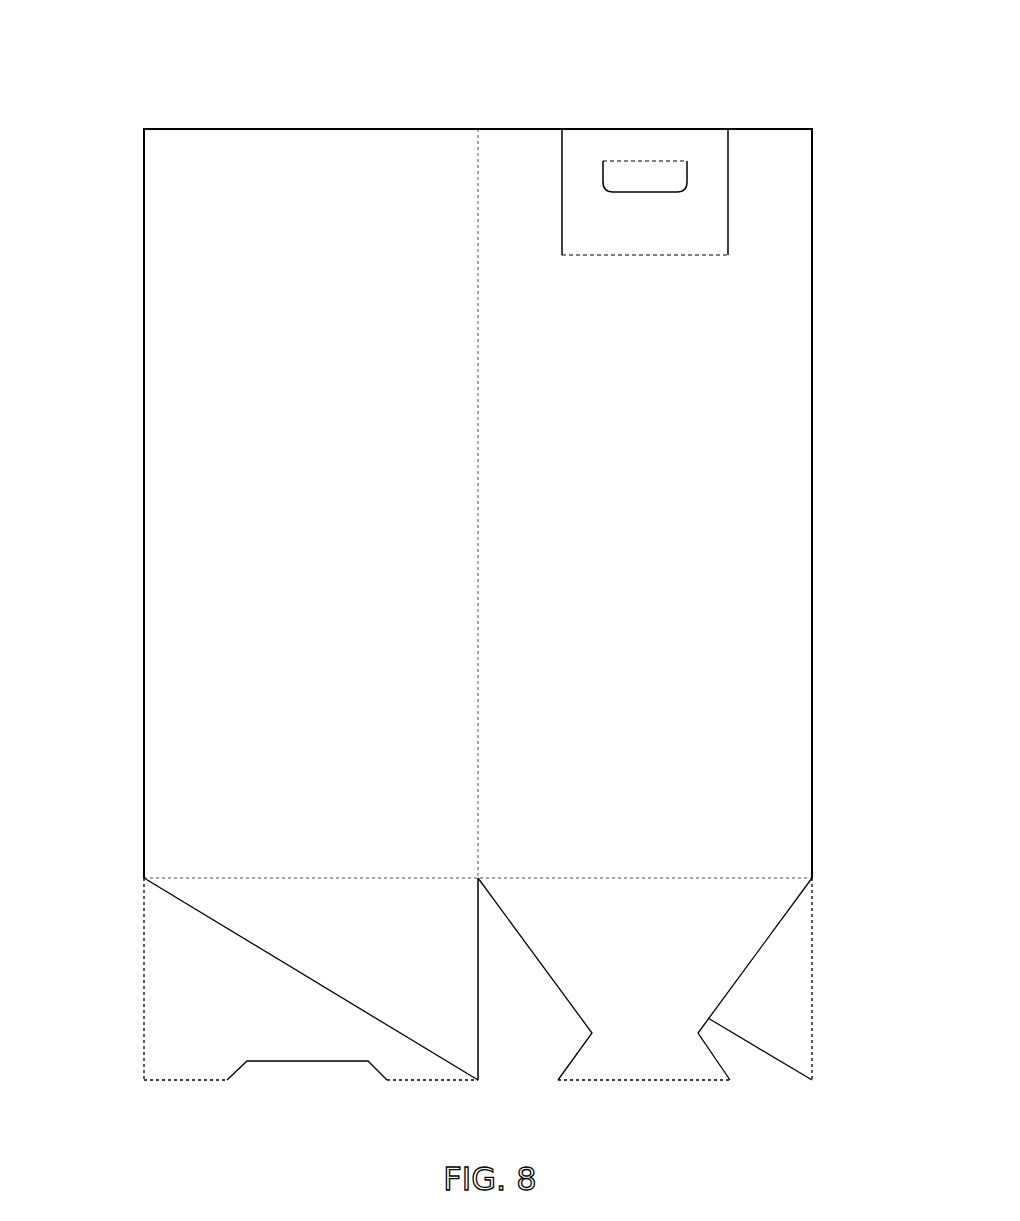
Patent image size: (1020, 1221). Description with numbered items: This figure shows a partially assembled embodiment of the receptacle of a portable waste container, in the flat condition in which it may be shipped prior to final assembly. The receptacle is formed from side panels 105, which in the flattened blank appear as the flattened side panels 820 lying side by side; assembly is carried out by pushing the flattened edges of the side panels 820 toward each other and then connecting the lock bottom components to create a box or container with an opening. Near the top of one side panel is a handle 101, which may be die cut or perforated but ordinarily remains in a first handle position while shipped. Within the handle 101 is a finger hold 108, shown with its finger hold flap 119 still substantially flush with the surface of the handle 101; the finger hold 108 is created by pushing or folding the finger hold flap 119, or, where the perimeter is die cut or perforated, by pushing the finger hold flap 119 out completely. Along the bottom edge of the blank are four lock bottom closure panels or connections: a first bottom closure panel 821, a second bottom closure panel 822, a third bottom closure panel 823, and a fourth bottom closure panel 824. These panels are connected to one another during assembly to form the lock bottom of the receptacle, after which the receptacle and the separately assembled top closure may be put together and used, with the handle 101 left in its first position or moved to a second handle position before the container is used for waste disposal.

The handle 101 is at (705, 205).
The side panel 105 is at (195, 743).
The finger hold 108 is at (640, 170).
The finger hold flap 119 is at (617, 170).
The side panels 820 is at (144, 486).
The first bottom closure panel 821 is at (187, 1057).
The second bottom closure panel 822 is at (435, 1030).
The third bottom closure panel 823 is at (657, 1057).
The fourth bottom closure panel 824 is at (800, 1057).